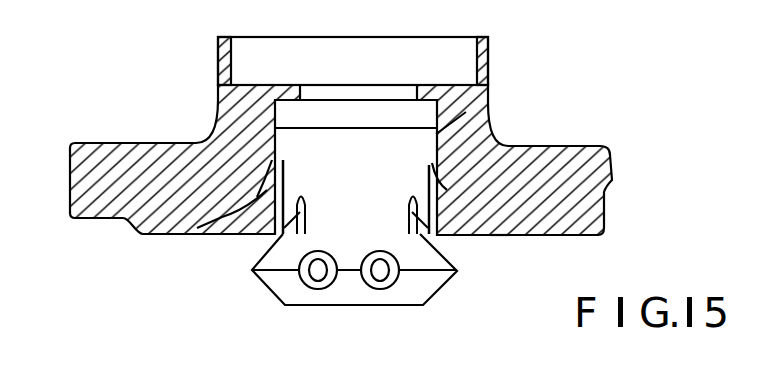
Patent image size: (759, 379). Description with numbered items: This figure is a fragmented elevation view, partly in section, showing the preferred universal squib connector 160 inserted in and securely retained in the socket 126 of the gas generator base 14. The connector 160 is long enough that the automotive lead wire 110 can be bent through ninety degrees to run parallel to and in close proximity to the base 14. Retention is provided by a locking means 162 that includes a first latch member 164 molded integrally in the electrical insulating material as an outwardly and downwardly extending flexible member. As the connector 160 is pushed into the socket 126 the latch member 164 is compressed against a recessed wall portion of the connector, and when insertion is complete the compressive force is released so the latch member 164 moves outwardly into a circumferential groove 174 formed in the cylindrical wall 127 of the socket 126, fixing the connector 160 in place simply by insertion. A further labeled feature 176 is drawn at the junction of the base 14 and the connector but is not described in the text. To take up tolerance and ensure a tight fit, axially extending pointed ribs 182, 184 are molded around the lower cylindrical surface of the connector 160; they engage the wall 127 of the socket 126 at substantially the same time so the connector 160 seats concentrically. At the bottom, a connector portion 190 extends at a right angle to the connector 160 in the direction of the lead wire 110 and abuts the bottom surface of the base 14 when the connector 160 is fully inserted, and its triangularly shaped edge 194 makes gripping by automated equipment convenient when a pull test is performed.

The base 14 is at (341, 169).
The universal squib connector 160 is at (270, 114).
The locking means 162 is at (273, 168).
The first latch member 164 is at (435, 162).
The socket 126 is at (438, 127).
The retainer 176 is at (197, 228).
The rib 184 is at (264, 235).
The cylindrical wall 127 is at (428, 237).
The circumferential groove 174 is at (500, 237).
The rib 182 is at (430, 272).
The triangularly shaped edge 194 is at (252, 273).
The connector portion 190 is at (309, 306).
The automotive lead wire 110 is at (383, 290).